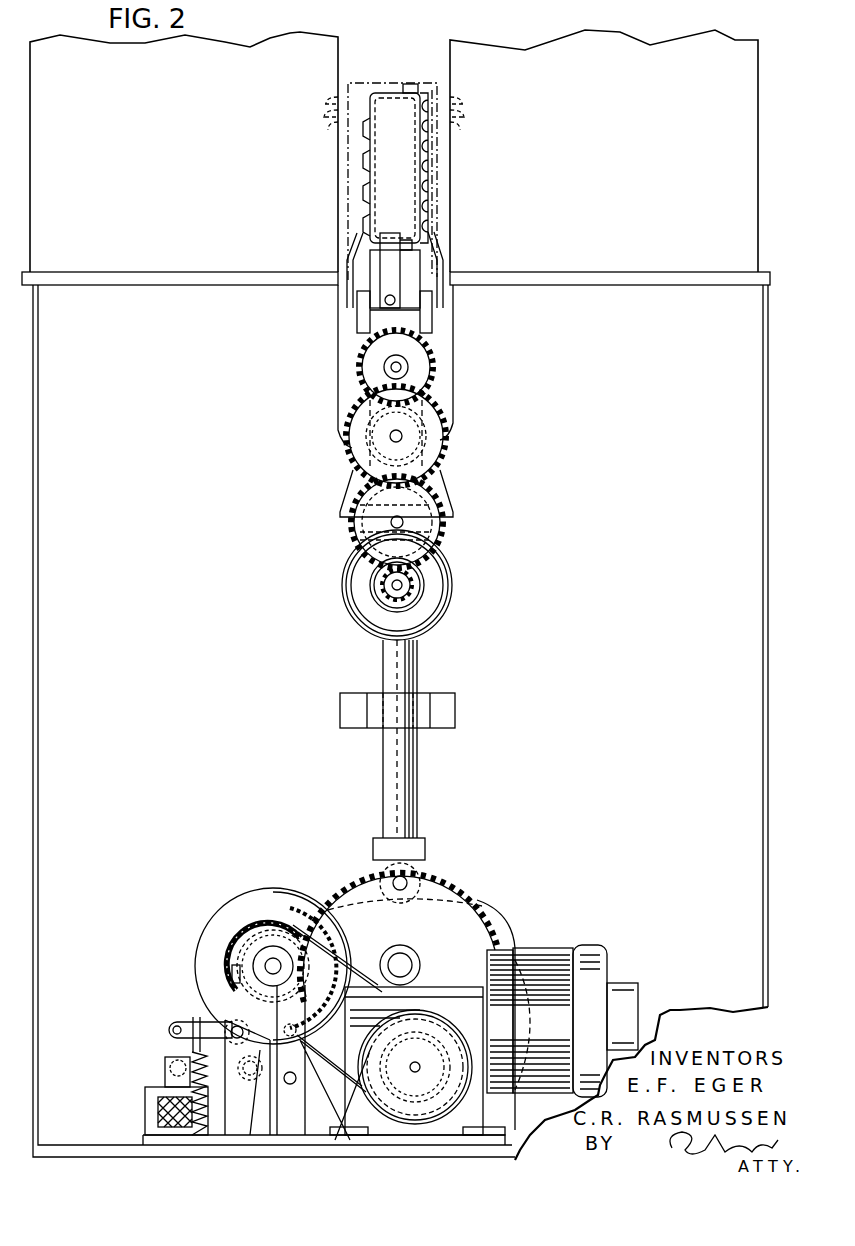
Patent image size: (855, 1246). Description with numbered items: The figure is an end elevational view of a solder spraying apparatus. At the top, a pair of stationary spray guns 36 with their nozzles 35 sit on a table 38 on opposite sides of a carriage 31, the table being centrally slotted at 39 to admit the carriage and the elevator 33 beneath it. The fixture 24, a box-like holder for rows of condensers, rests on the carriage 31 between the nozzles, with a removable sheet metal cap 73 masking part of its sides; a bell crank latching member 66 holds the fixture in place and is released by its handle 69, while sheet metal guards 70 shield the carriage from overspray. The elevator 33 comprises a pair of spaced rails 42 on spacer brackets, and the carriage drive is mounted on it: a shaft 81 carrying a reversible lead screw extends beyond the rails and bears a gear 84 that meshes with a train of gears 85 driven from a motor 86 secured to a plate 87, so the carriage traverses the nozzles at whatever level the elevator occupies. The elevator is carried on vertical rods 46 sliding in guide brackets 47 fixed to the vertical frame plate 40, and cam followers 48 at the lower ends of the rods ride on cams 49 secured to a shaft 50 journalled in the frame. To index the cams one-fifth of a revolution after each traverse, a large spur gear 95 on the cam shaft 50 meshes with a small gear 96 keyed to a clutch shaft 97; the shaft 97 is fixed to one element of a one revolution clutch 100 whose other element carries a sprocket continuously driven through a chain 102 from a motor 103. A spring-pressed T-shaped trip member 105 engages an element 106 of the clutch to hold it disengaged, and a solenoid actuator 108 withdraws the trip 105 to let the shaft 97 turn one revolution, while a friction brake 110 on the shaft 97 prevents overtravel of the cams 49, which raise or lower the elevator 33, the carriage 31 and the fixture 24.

The spray gun 36 is at (262, 70).
The nozzle 35 is at (335, 130).
The fixture 24 is at (360, 168).
The removable sheet metal cap 73 is at (440, 180).
The carriage 31 is at (368, 255).
The bell crank latching member 66 is at (388, 270).
The sheet metal guard 70 is at (432, 254).
The table 38 is at (156, 278).
The slot 39 is at (446, 285).
The handle 69 is at (386, 302).
The rail 42 is at (364, 325).
The shaft 81 is at (398, 367).
The elevator 33 is at (352, 390).
The gear 84 is at (436, 378).
The train of gears 85 is at (452, 428).
The plate 87 is at (450, 519).
The motor 86 is at (440, 579).
The guide bracket 47 is at (372, 698).
The vertical rod 46 is at (410, 753).
The cam follower 48 is at (425, 882).
The cam 49 is at (497, 905).
The shaft 50 is at (402, 963).
The chain 102 is at (370, 965).
The motor 103 is at (578, 940).
The friction brake 110 is at (280, 888).
The spur gear 95 is at (330, 902).
The gear 96 is at (262, 925).
The one revolution clutch 100 is at (255, 918).
The clutch shaft 97 is at (270, 964).
The clutch element 106 is at (235, 952).
The trip member 105 is at (235, 978).
The solenoid actuator 108 is at (175, 1107).
The vertical frame plate 40 is at (752, 822).